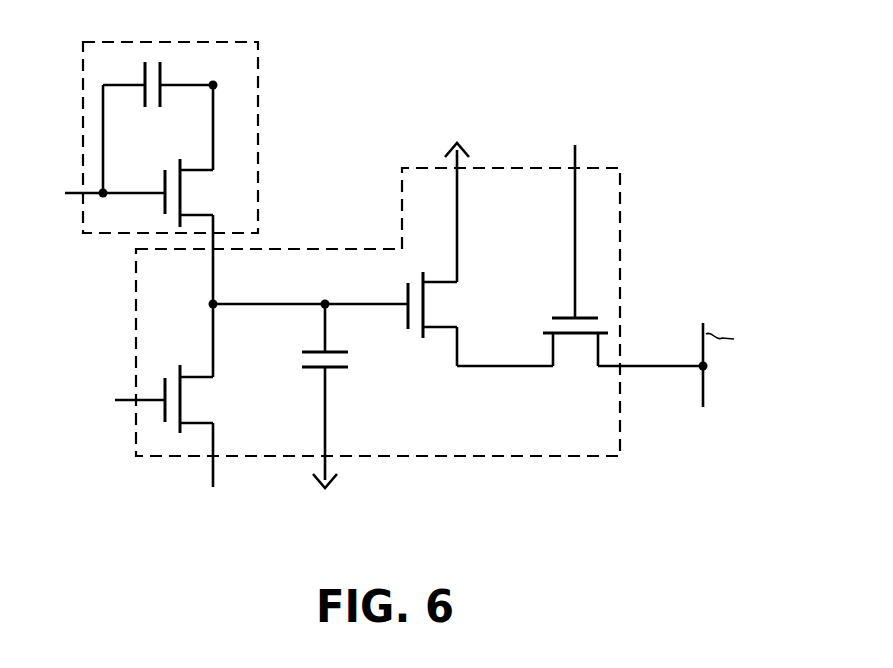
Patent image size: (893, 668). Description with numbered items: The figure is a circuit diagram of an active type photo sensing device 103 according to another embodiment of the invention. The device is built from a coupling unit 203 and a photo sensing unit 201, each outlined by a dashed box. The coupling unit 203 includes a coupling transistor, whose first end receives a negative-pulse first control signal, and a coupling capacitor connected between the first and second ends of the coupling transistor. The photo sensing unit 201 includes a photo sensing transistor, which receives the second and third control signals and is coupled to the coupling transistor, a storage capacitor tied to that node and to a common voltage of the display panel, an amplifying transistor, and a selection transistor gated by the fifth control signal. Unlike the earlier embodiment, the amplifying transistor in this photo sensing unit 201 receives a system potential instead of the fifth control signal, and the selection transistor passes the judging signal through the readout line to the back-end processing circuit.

The coupling unit 203 is at (232, 42).
The photo sensing unit 201 is at (597, 168).
The active type photo sensing device 103 is at (727, 539).